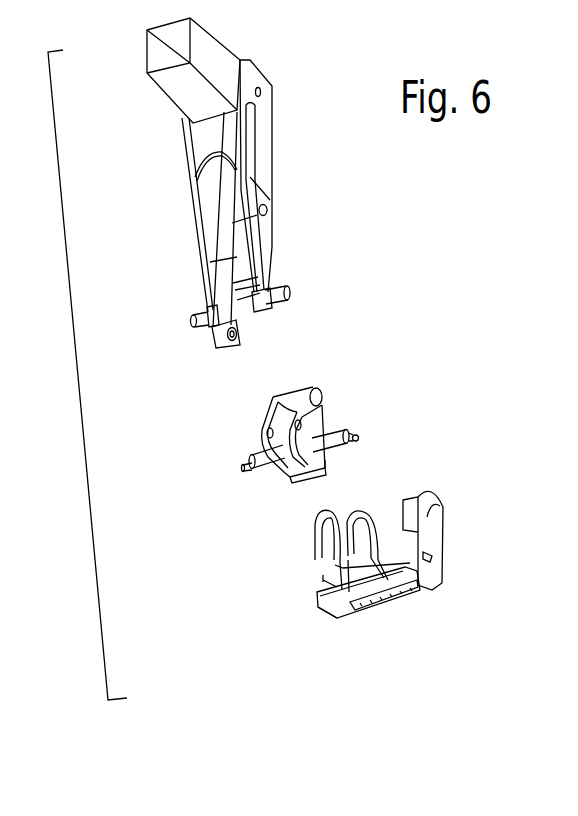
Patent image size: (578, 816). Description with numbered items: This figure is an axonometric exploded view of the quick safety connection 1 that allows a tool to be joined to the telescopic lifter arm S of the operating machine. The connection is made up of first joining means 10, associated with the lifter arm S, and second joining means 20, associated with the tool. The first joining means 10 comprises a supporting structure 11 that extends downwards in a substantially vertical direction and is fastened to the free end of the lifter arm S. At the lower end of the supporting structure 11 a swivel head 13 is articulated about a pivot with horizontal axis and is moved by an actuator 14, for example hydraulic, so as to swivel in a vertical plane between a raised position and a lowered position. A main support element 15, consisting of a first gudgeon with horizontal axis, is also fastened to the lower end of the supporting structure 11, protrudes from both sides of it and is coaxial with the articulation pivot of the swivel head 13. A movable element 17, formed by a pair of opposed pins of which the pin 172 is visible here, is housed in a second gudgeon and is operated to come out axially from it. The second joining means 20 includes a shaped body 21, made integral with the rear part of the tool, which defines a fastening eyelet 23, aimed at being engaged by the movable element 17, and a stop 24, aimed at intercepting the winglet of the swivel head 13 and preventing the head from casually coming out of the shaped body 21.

The quick safety connection 1 is at (437, 328).
The first joining means 10 is at (364, 213).
The telescopic lifter arm S is at (145, 60).
The supporting structure 11 is at (268, 150).
The actuator 14 is at (221, 337).
The main support element 15 is at (290, 298).
The swivel head 13 is at (262, 432).
The movable element 17 is at (361, 430).
The pin 172 is at (358, 443).
The second joining means 20 is at (265, 643).
The shaped body 21 is at (454, 502).
The fastening eyelet 23 is at (434, 556).
The stop 24 is at (318, 532).